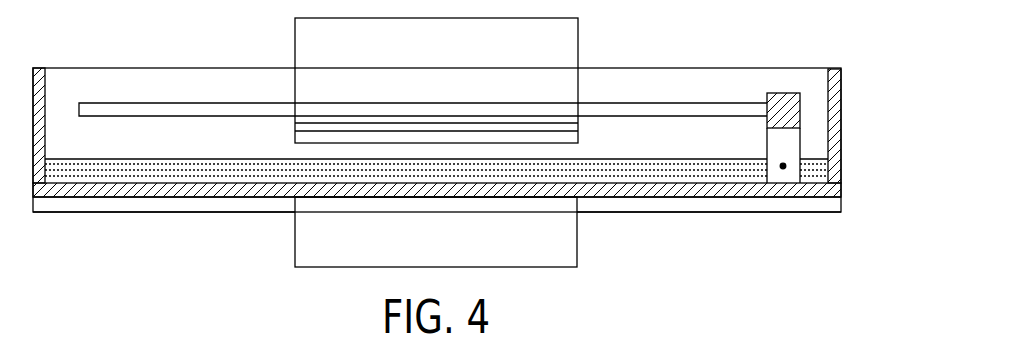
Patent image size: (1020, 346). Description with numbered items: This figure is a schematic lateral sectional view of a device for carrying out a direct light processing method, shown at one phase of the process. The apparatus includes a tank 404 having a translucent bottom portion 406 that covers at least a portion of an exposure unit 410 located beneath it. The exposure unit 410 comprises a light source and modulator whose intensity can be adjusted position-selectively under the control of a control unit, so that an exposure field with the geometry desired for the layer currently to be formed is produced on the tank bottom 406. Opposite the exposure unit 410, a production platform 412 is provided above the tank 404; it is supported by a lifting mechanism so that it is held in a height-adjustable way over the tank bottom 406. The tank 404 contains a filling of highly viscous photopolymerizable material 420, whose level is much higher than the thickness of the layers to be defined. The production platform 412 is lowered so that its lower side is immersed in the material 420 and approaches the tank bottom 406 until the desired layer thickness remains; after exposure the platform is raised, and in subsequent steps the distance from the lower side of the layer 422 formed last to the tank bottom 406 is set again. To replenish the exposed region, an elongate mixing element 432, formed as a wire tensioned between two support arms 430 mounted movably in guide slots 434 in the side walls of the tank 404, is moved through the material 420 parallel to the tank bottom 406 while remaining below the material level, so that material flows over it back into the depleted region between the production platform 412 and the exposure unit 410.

The tank 404 is at (843, 88).
The translucent bottom portion 406 is at (568, 190).
The exposure unit 410 is at (307, 252).
The production platform 412 is at (578, 30).
The photopolymerizable material 420 is at (80, 175).
The layer 422 is at (295, 137).
The support arms 430 is at (782, 103).
The elongate mixing element 432 is at (782, 170).
The guide slots 434 is at (704, 108).